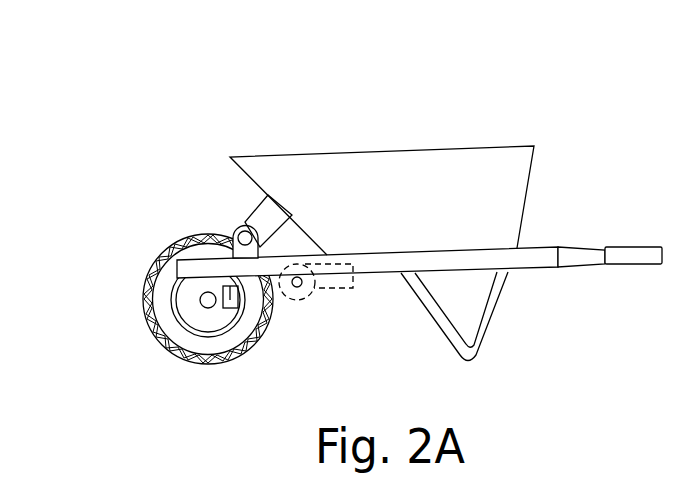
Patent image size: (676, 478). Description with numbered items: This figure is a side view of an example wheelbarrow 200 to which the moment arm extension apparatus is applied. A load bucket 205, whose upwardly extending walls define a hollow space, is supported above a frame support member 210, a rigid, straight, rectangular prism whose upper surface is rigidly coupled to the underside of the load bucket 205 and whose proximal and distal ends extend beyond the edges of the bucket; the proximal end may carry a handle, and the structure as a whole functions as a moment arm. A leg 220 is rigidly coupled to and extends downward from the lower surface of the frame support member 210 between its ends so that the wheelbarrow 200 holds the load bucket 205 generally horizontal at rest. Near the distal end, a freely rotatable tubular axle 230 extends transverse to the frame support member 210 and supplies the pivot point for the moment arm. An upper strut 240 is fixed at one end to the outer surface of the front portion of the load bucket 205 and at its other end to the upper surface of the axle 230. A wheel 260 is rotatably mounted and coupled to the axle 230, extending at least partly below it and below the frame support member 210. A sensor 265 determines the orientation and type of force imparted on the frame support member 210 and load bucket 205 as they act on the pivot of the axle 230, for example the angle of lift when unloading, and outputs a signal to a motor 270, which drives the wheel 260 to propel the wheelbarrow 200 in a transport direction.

The wheelbarrow 200 is at (110, 120).
The load bucket 205 is at (428, 214).
The frame support member 210 is at (543, 247).
The leg 220 is at (496, 320).
The axle 230 is at (240, 229).
The upper strut 240 is at (255, 205).
The wheel 260 is at (147, 320).
The sensor 265 is at (232, 303).
The motor 270 is at (312, 297).